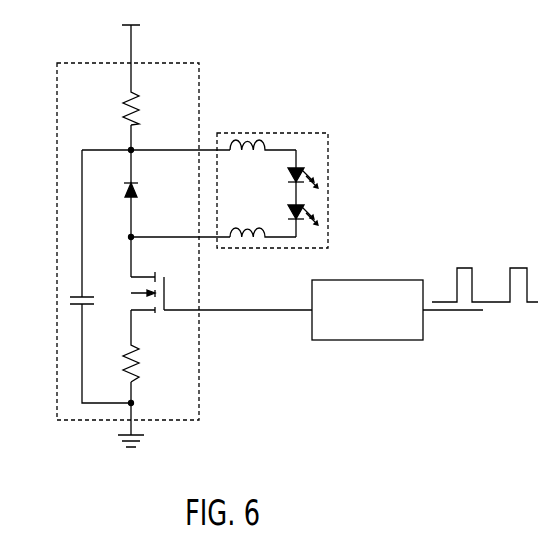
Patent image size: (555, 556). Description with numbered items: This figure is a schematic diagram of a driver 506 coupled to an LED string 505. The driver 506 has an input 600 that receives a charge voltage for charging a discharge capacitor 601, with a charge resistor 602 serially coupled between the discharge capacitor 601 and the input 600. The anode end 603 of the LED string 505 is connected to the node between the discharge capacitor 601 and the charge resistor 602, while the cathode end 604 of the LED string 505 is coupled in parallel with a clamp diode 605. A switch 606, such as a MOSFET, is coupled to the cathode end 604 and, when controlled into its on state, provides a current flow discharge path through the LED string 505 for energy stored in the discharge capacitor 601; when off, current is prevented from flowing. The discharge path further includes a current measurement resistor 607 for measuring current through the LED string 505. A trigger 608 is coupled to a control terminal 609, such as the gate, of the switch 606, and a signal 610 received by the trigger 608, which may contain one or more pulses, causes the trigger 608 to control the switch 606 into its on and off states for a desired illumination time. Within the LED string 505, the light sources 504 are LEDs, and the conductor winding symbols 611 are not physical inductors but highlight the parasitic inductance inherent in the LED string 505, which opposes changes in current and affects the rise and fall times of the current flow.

The input 600 is at (131, 55).
The driver 506 is at (199, 82).
The charge resistor 602 is at (128, 90).
The anode end 603 is at (204, 150).
The clamp diode 605 is at (133, 193).
The cathode end 604 is at (206, 240).
The discharge capacitor 601 is at (76, 297).
The switch 606 is at (138, 312).
The control terminal 609 is at (167, 312).
The current measurement resistor 607 is at (133, 378).
The LED string 505 is at (328, 133).
The conductor winding symbols 611 is at (266, 142).
The light sources 504 is at (300, 166).
The trigger 608 is at (362, 280).
The signal 610 is at (460, 268).